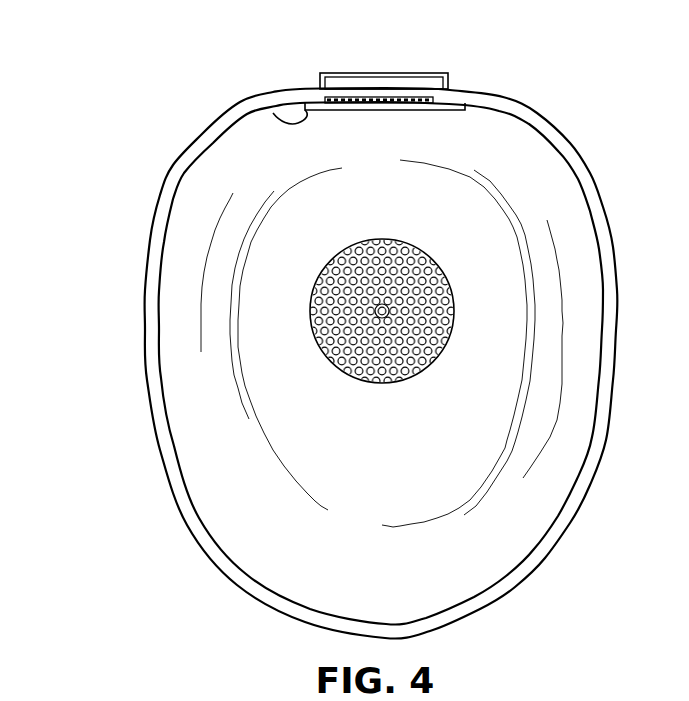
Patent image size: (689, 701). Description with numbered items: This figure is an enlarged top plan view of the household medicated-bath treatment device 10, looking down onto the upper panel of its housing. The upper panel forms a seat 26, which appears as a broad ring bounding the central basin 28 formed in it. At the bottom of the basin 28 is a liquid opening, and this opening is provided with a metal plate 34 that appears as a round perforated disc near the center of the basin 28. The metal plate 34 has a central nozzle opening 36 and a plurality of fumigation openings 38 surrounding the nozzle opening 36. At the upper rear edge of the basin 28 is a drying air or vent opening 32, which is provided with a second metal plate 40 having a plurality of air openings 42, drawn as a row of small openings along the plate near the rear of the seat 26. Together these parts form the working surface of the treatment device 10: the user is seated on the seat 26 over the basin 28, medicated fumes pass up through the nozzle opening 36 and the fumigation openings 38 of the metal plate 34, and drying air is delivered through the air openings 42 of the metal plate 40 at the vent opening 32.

The treatment device 10 is at (118, 290).
The seat 26 is at (578, 296).
The basin 28 is at (483, 258).
The vent opening 32 is at (345, 86).
The metal plate 34 is at (453, 335).
The nozzle opening 36 is at (382, 319).
The fumigation openings 38 is at (341, 353).
The metal plate 40 is at (372, 102).
The air openings 42 is at (273, 113).